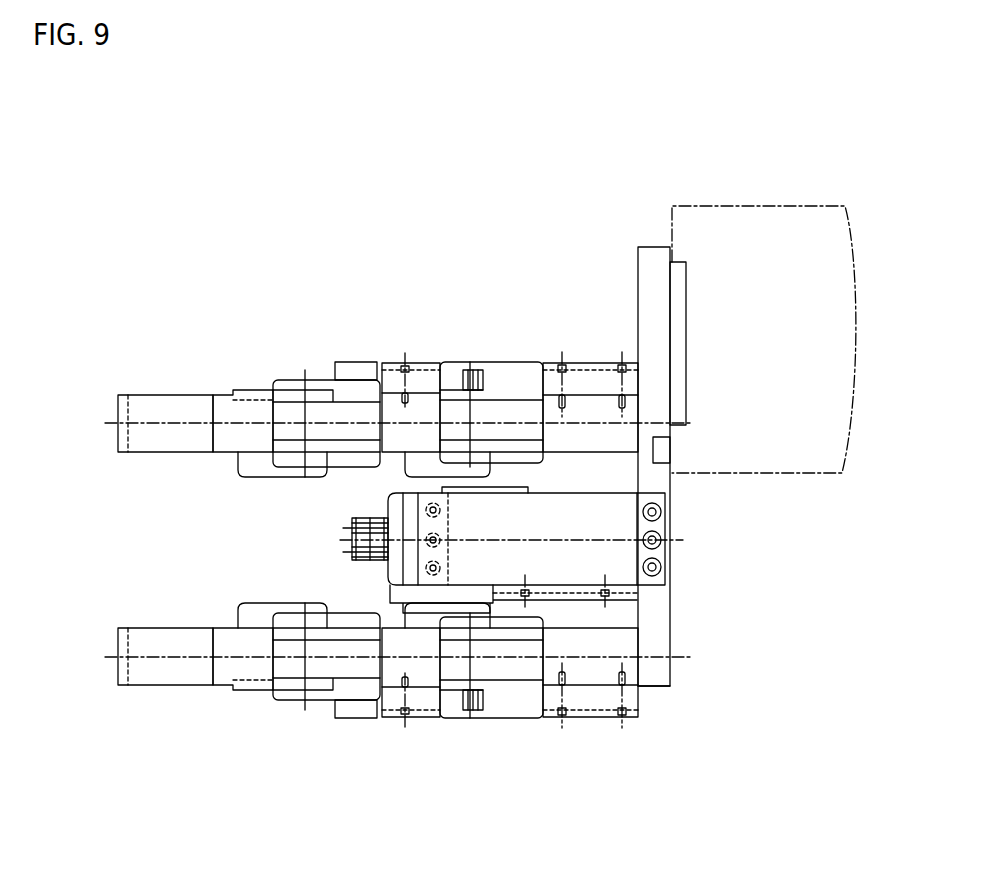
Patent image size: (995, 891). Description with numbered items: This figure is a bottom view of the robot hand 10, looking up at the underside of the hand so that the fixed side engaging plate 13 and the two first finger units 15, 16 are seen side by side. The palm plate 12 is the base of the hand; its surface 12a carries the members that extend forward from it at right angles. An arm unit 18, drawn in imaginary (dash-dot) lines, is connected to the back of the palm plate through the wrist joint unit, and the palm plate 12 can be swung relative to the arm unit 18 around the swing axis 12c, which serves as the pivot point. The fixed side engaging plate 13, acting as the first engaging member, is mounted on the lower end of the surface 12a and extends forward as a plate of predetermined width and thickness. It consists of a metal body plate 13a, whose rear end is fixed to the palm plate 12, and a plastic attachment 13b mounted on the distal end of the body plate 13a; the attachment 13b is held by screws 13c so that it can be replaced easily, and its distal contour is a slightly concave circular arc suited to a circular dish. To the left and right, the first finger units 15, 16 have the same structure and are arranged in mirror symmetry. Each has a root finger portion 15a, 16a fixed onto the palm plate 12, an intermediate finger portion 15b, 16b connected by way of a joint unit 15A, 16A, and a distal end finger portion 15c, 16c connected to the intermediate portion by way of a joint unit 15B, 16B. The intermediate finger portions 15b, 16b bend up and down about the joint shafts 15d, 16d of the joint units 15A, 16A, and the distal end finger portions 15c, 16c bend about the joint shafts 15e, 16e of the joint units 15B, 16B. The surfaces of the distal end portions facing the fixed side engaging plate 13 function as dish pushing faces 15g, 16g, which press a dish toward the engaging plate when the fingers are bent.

The robot hand 10 is at (532, 238).
The palm plate 12 is at (644, 282).
The surface of the palm plate 12a is at (638, 620).
The swing axis 12c is at (743, 330).
The fixed side engaging plate 13 is at (529, 533).
The body plate 13a is at (580, 518).
The attachment 13b is at (398, 563).
The screws 13c is at (437, 538).
The first finger unit 15 is at (378, 738).
The joint unit 15A is at (468, 735).
The joint unit 15B is at (228, 700).
The root finger portion 15a is at (598, 670).
The intermediate finger portion 15b is at (413, 668).
The distal end finger portion 15c is at (250, 672).
The joint shaft 15d is at (470, 664).
The joint shaft 15e is at (305, 665).
The dish pushing face 15g is at (147, 672).
The first finger unit 16 is at (378, 392).
The joint unit 16A is at (457, 350).
The joint unit 16B is at (296, 490).
The root finger portion 16a is at (583, 407).
The intermediate finger portion 16b is at (413, 417).
The distal end finger portion 16c is at (220, 413).
The joint shaft 16d is at (470, 417).
The joint shaft 16e is at (305, 418).
The dish pushing face 16g is at (147, 405).
The arm unit 18 is at (790, 200).